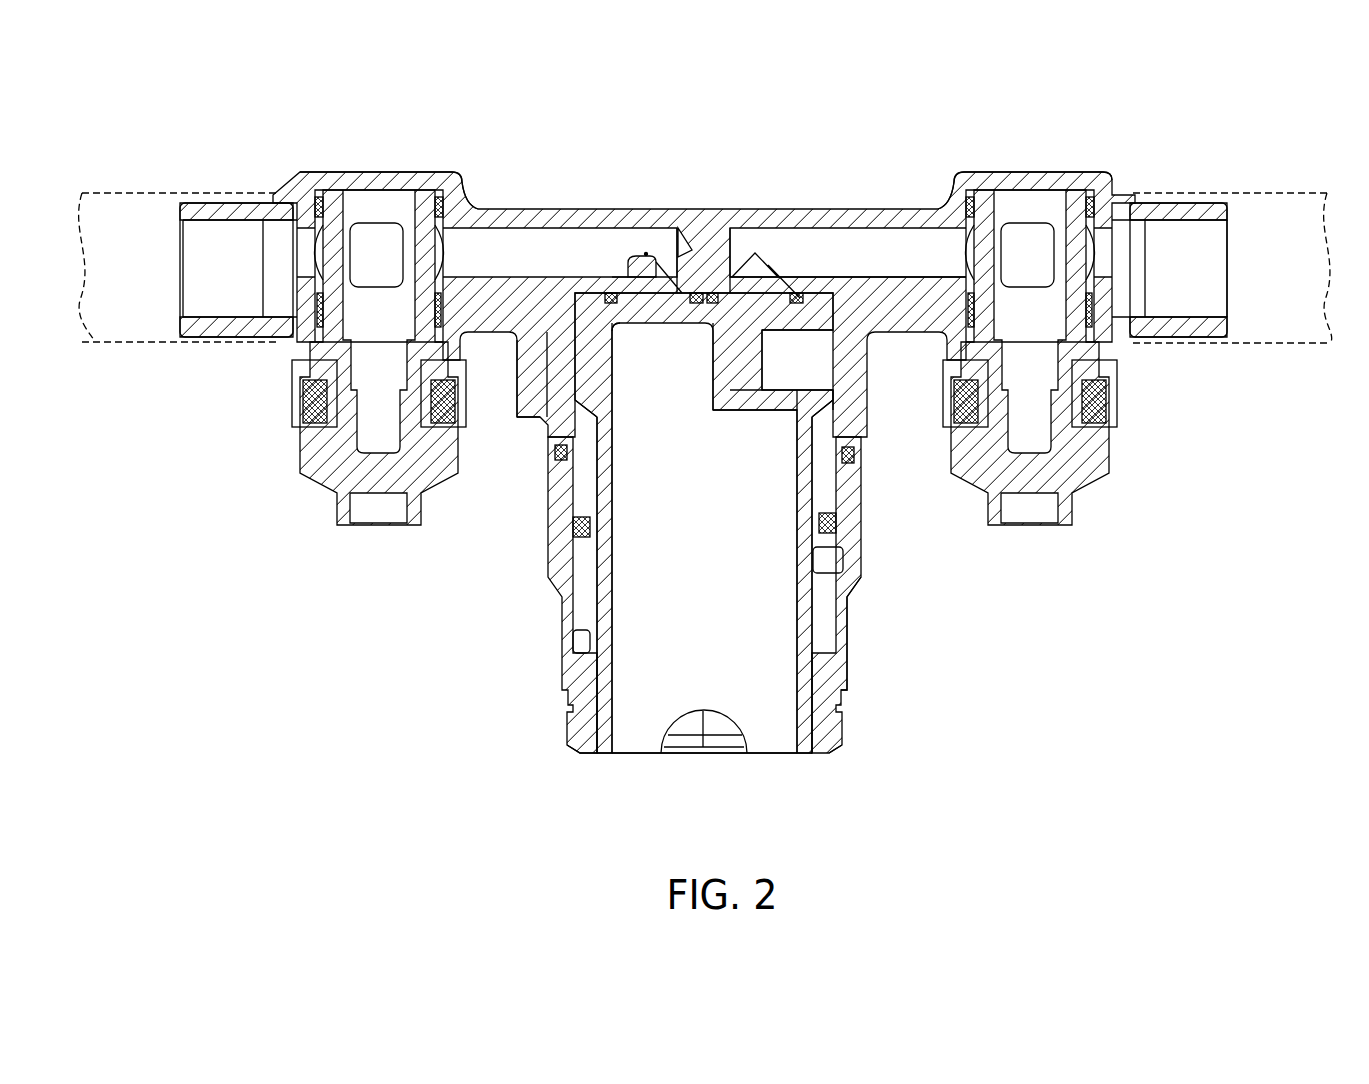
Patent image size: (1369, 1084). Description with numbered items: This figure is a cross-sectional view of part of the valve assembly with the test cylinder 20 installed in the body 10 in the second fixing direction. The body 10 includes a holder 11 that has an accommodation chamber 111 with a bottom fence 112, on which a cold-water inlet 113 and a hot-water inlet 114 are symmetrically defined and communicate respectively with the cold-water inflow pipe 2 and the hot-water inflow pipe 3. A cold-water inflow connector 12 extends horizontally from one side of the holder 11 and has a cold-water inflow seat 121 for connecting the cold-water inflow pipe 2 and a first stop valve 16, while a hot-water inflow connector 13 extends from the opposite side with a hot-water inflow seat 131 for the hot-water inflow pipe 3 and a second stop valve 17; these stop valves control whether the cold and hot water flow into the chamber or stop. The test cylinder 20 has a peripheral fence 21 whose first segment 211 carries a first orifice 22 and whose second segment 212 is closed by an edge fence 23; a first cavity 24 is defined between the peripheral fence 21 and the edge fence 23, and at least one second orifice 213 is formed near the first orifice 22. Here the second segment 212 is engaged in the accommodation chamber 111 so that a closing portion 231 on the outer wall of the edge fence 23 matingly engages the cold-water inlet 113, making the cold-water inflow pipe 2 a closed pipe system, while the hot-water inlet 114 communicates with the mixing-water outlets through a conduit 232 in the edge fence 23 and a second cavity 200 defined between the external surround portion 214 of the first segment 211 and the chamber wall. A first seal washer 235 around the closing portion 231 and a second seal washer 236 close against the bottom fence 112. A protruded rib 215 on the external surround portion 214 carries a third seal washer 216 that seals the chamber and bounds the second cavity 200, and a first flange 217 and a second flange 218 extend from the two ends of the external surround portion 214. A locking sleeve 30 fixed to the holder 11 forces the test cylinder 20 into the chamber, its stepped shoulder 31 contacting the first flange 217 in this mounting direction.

The cold-water inflow pipe 2 is at (118, 352).
The hot-water inflow pipe 3 is at (1293, 350).
The body 10 is at (696, 196).
The holder 11 is at (587, 368).
The cold-water inflow connector 12 is at (486, 207).
The hot-water inflow connector 13 is at (916, 207).
The first stop valve 16 is at (347, 523).
The second stop valve 17 is at (1063, 523).
The test cylinder 20 is at (583, 600).
The peripheral fence 21 is at (805, 592).
The first orifice 22 is at (773, 751).
The edge fence 23 is at (745, 268).
The first cavity 24 is at (637, 727).
The locking sleeve 30 is at (858, 668).
The stepped shoulder 31 is at (583, 625).
The accommodation chamber 111 is at (882, 277).
The bottom fence 112 is at (547, 322).
The cold-water inlet 113 is at (614, 275).
The hot-water inlet 114 is at (798, 272).
The cold-water inflow seat 121 is at (221, 192).
The hot-water inflow seat 131 is at (1178, 193).
The second cavity 200 is at (557, 403).
The first segment 211 is at (600, 757).
The second segment 212 is at (576, 292).
The second orifice 213 is at (703, 748).
The external surround portion 214 is at (854, 456).
The protruded rib 215 is at (858, 545).
The third seal washer 216 is at (850, 516).
The first flange 217 is at (855, 635).
The second flange 218 is at (846, 407).
The closing portion 231 is at (646, 257).
The conduit 232 is at (775, 362).
The first seal washer 235 is at (607, 292).
The second seal washer 236 is at (840, 290).